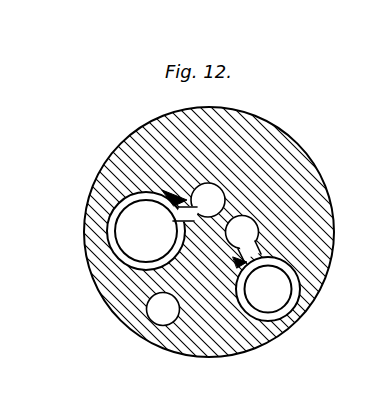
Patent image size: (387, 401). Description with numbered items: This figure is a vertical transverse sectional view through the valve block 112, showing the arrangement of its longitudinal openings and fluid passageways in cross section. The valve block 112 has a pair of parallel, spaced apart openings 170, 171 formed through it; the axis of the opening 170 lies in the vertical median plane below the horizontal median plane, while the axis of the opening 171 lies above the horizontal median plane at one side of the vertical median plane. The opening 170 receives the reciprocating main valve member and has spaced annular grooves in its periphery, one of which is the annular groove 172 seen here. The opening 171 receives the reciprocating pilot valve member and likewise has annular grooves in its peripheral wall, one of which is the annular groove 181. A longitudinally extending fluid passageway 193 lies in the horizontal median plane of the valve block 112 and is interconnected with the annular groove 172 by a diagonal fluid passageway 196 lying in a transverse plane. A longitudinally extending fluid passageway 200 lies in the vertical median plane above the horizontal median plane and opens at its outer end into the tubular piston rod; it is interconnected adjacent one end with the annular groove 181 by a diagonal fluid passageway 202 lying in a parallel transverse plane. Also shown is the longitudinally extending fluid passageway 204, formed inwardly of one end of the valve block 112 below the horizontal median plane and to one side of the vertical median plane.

The valve block 112 is at (300, 153).
The opening 170 is at (130, 220).
The annular groove 172 is at (116, 254).
The fluid passageway 193 is at (218, 183).
The diagonal fluid passageway 196 is at (170, 197).
The fluid passageway 200 is at (252, 225).
The diagonal fluid passageway 202 is at (256, 250).
The annular groove 181 is at (297, 292).
The opening 171 is at (268, 302).
The fluid passageway 204 is at (148, 320).